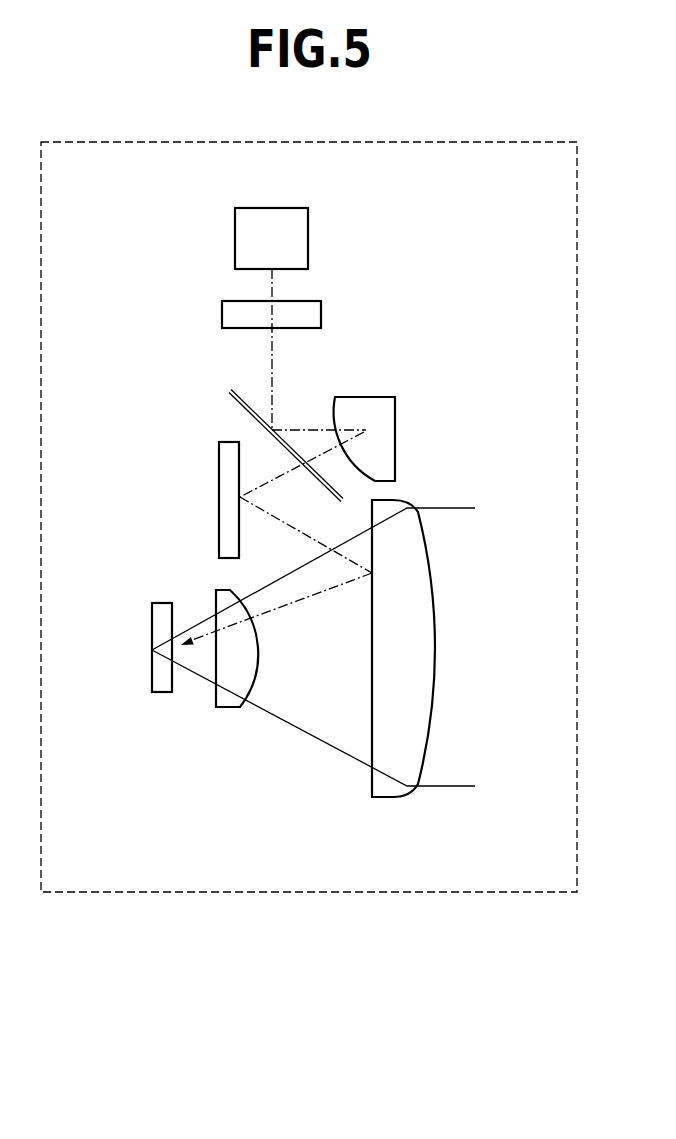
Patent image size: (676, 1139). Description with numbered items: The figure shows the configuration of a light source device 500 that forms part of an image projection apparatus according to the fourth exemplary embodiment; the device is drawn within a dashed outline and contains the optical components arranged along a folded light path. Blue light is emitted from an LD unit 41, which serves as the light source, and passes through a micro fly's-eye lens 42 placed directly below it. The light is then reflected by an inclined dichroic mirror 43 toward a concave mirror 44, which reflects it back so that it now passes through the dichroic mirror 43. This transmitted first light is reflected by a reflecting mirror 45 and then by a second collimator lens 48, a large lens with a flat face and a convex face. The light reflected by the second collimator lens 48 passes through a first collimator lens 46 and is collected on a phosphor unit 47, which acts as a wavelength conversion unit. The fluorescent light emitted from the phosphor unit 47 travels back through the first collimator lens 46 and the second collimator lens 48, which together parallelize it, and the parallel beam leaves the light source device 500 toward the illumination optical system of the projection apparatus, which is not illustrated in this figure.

The LD unit 41 is at (235, 229).
The micro fly's-eye lens 42 is at (321, 314).
The dichroic mirror 43 is at (230, 389).
The concave mirror 44 is at (395, 437).
The reflecting mirror 45 is at (219, 465).
The first collimator lens 46 is at (226, 708).
The phosphor unit 47 is at (151, 673).
The second collimator lens 48 is at (436, 647).
The light source device 500 is at (310, 892).